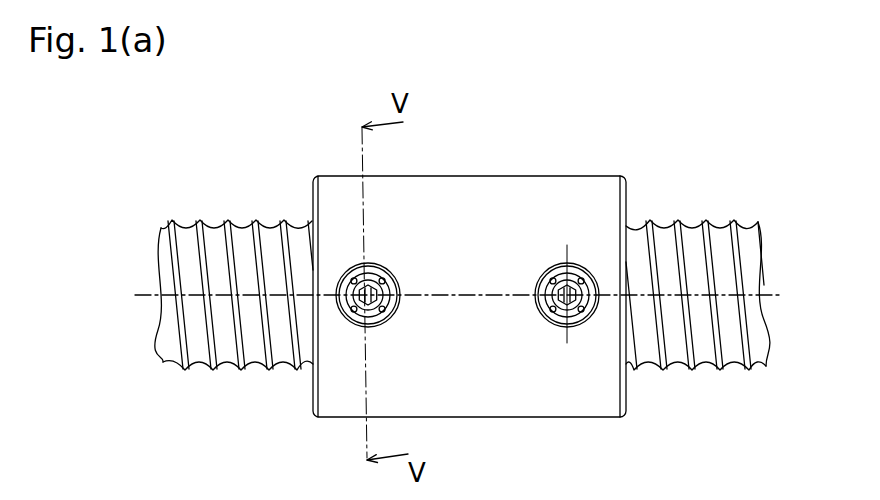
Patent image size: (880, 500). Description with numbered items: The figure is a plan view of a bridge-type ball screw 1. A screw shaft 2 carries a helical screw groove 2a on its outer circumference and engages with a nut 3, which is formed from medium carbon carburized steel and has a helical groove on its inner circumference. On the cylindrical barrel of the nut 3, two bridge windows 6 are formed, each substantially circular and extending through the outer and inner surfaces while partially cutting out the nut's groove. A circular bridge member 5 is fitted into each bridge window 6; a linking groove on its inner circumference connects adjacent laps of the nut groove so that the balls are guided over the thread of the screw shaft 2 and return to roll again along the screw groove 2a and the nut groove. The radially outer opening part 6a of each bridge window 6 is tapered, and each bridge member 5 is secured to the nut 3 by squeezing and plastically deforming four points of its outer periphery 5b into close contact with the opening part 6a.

The bridge-type ball screw 1 is at (584, 170).
The screw shaft 2 is at (698, 218).
The helical screw groove 2a is at (702, 372).
The nut 3 is at (512, 192).
The bridge member 5 is at (362, 266).
The outer periphery of the bridge member 5b is at (396, 306).
The bridge window 6 is at (382, 268).
The opening part 6a is at (397, 279).